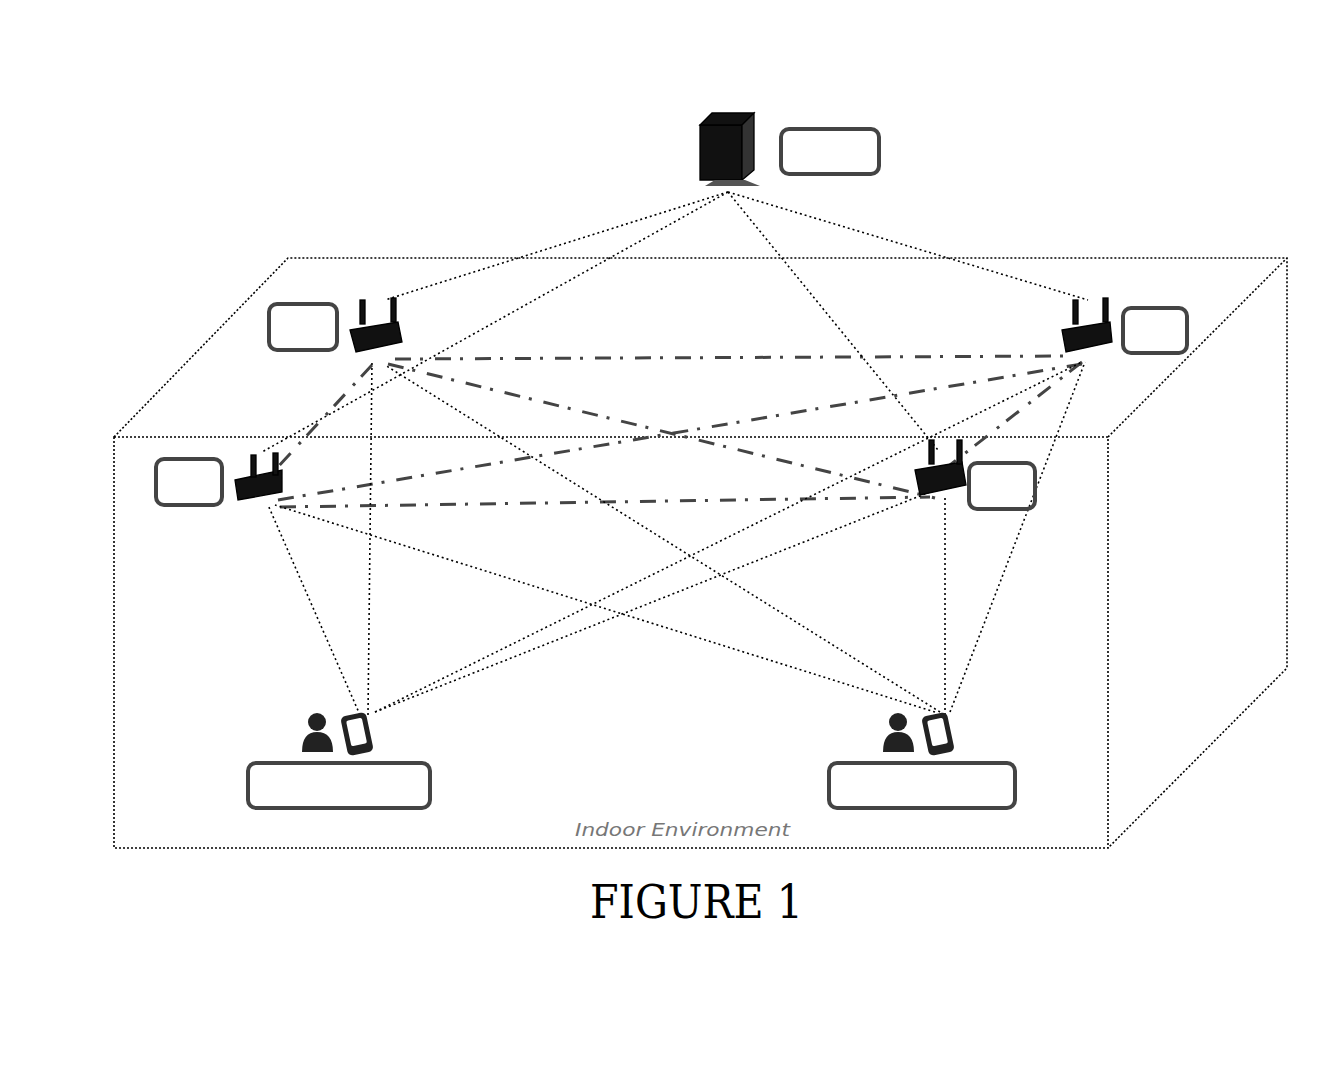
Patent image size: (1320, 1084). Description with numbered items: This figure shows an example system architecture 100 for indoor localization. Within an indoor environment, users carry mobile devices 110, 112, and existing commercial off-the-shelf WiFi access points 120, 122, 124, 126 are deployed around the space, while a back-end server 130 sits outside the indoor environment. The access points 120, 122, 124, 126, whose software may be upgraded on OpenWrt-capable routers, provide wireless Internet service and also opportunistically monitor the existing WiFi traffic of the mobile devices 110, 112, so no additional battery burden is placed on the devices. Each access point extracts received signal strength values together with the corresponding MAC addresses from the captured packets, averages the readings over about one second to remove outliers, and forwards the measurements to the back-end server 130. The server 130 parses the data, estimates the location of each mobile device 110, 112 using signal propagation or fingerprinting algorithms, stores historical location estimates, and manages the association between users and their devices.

The system architecture 100 is at (232, 178).
The mobile device 110 is at (372, 720).
The mobile device 112 is at (950, 722).
The WiFi access point 120 is at (252, 470).
The WiFi access point 122 is at (365, 320).
The WiFi access point 124 is at (938, 470).
The WiFi access point 126 is at (1095, 330).
The back-end server 130 is at (752, 120).